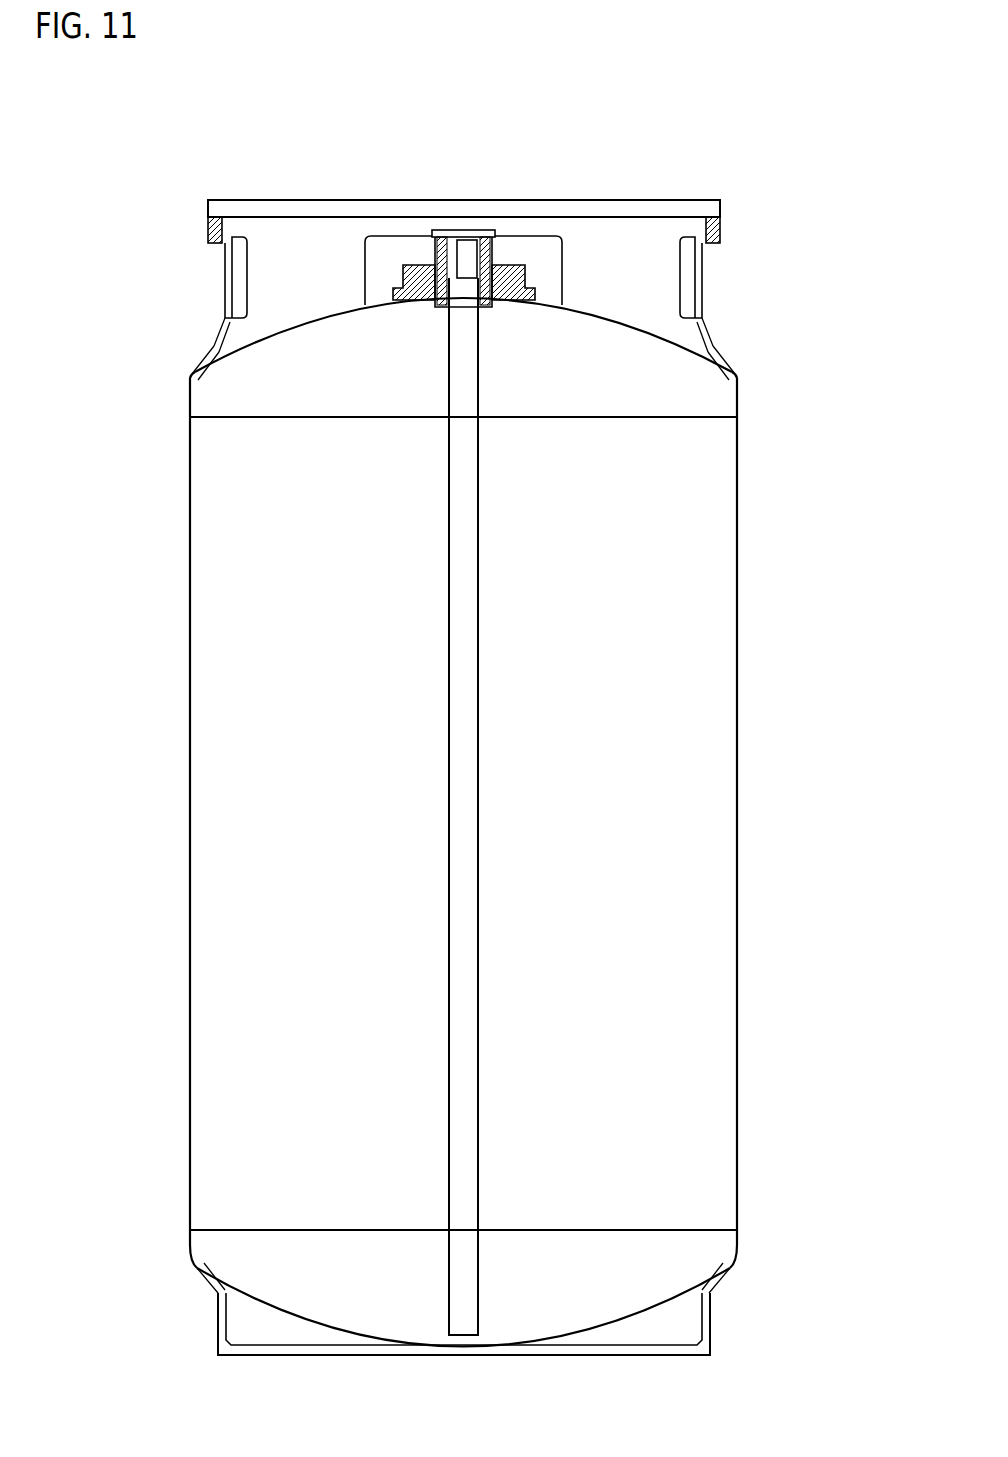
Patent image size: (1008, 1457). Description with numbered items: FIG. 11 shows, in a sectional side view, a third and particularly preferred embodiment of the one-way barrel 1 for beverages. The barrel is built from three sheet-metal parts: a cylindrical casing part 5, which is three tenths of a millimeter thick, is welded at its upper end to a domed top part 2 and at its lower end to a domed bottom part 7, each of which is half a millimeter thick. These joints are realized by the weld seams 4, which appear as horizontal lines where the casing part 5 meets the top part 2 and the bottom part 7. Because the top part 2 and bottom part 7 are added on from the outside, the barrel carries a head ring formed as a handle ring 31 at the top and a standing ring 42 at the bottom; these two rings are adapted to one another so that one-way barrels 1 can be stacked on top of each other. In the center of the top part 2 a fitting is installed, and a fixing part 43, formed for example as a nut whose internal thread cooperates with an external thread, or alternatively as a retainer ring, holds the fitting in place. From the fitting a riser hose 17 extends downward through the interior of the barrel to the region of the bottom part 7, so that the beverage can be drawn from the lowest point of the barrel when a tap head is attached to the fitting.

The one-way barrel 1 is at (802, 316).
The top part 2 is at (738, 398).
The weld seams 4 is at (640, 418).
The casing part 5 is at (738, 770).
The bottom part 7 is at (737, 1243).
The riser hose 17 is at (480, 1048).
The handle ring 31 is at (280, 200).
The standing ring 42 is at (218, 1325).
The fixing part 43 is at (525, 282).